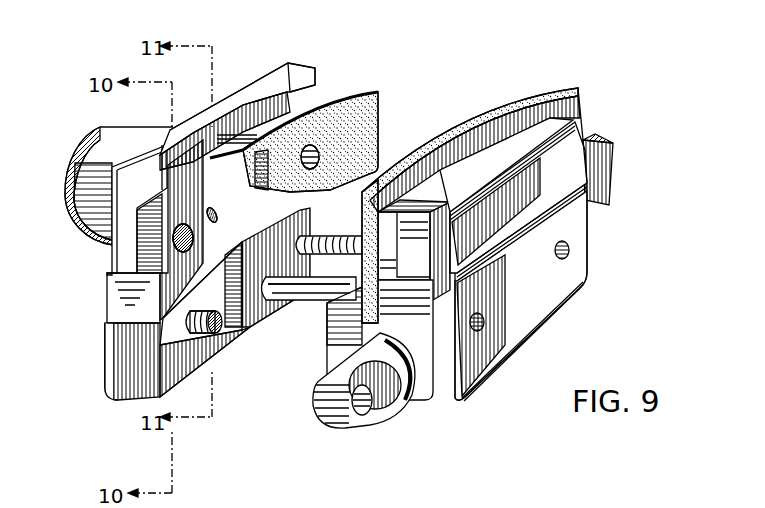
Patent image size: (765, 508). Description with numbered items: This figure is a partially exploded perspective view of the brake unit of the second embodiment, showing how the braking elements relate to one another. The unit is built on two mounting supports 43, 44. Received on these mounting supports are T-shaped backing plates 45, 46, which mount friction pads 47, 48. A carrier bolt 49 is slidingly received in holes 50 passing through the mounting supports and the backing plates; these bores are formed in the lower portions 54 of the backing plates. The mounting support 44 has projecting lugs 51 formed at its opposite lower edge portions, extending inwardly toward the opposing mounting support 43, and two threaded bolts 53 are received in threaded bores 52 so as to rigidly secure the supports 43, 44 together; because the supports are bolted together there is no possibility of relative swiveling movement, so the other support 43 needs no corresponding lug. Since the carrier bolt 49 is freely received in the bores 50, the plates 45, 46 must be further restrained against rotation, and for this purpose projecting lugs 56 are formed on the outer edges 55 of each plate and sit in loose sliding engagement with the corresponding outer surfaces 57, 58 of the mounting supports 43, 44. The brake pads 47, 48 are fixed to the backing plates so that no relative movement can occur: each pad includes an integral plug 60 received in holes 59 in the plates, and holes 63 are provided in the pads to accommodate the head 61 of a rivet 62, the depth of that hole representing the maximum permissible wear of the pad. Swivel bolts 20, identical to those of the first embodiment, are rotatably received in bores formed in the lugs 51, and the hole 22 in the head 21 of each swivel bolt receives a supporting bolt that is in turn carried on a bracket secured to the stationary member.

The swivel bolt 20 is at (415, 404).
The head 21 is at (334, 419).
The hole 22 is at (367, 424).
The mounting support 43 is at (125, 353).
The mounting support 44 is at (513, 318).
The T-shaped backing plate 45 is at (283, 108).
The T-shaped backing plate 46 is at (505, 118).
The friction pad 47 is at (373, 110).
The friction pad 48 is at (476, 121).
The carrier bolt 49 is at (313, 296).
The hole 50 is at (266, 277).
The projecting lug 51 is at (338, 352).
The threaded bore 52 is at (479, 333).
The threaded bolt 53 is at (335, 233).
The lower portion 54 is at (252, 338).
The outer edge 55 is at (145, 247).
The projecting lug 56 is at (110, 300).
The outer surface 57 is at (118, 247).
The outer surface 58 is at (425, 180).
The hole 59 is at (193, 235).
The integral plug 60 is at (192, 243).
The head 61 is at (314, 150).
The rivet 62 is at (213, 207).
The hole 63 is at (319, 159).